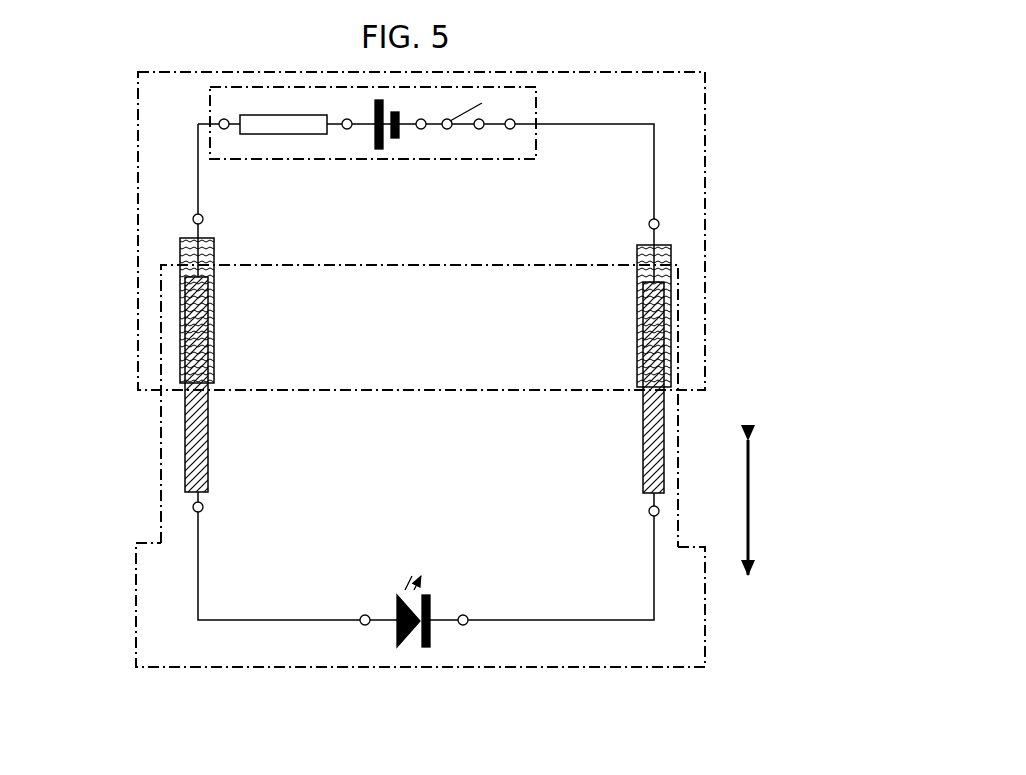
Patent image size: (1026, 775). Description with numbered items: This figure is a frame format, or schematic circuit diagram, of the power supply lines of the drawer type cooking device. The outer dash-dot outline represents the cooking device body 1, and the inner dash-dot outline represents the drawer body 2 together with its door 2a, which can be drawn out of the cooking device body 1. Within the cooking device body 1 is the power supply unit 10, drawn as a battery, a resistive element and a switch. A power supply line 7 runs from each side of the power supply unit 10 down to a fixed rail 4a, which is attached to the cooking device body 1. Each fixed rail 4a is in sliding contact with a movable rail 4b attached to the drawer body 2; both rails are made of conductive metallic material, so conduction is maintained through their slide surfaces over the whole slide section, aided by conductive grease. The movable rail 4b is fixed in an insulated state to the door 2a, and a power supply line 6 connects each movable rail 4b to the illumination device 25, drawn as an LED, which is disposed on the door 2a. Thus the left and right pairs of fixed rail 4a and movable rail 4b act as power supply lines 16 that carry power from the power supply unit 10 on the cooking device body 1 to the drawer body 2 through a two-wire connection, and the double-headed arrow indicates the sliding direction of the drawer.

The cooking device body 1 is at (707, 227).
The drawer body 2 is at (160, 522).
The door 2a is at (707, 622).
The fixed rail 4a is at (180, 278).
The movable rail 4b is at (185, 437).
The power supply line 6 is at (198, 578).
The power supply line 7 is at (198, 190).
The power supply unit 10 is at (367, 143).
The power supply line 16 is at (173, 341).
The illumination device 25 is at (386, 655).